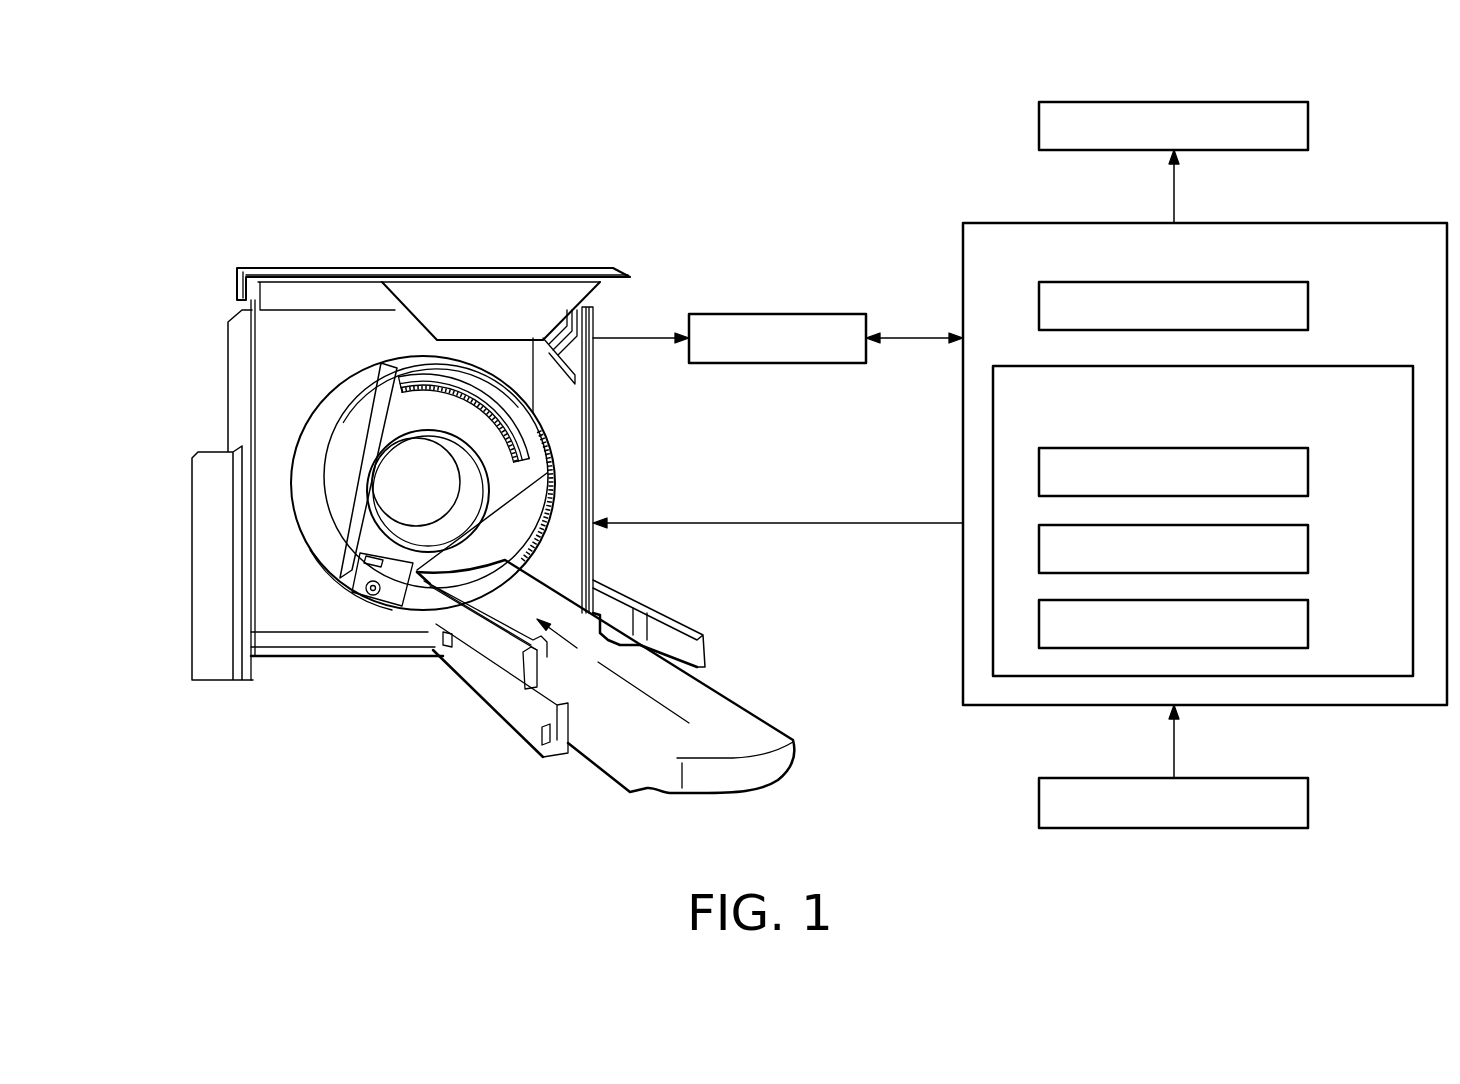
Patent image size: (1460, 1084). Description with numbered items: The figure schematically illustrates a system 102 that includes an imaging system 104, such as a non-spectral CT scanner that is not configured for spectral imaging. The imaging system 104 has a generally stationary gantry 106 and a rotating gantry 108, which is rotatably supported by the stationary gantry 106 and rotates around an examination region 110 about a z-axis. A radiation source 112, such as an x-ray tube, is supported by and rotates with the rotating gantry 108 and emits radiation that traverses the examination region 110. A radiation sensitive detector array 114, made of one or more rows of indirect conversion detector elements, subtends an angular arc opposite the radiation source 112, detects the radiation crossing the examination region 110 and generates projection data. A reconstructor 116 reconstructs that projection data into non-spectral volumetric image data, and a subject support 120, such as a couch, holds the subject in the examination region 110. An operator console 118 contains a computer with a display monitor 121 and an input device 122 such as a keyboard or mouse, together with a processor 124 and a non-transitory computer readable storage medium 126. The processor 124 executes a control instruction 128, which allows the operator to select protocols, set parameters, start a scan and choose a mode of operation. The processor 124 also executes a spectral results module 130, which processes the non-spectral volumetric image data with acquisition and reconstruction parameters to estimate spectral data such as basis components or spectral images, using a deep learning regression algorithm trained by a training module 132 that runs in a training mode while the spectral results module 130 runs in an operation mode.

The system 102 is at (443, 428).
The imaging system 104 is at (417, 449).
The stationary gantry 106 is at (233, 362).
The rotating gantry 108 is at (392, 415).
The examination region 110 is at (428, 491).
The radiation source 112 is at (372, 597).
The radiation sensitive detector array 114 is at (540, 432).
The reconstructor 116 is at (778, 313).
The operator console 118 is at (1013, 223).
The subject support 120 is at (750, 718).
The display monitor 121 is at (1308, 120).
The input device 122 is at (1308, 798).
The processor 124 is at (1308, 305).
The computer readable storage medium 126 is at (1013, 366).
The control instruction 128 is at (1308, 468).
The spectral results module 130 is at (1308, 545).
The training module 132 is at (1308, 620).